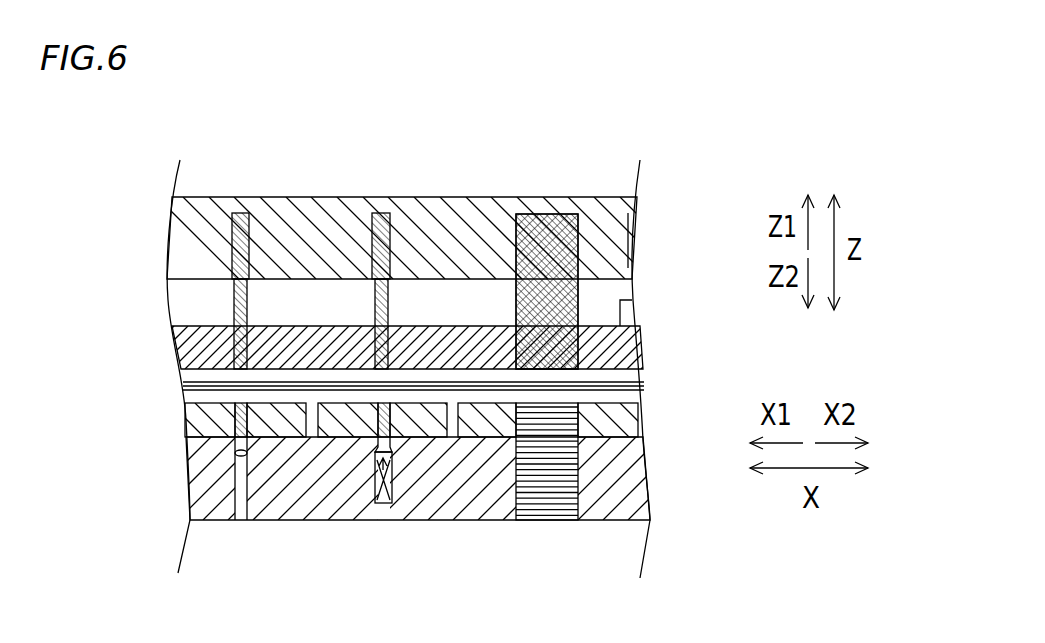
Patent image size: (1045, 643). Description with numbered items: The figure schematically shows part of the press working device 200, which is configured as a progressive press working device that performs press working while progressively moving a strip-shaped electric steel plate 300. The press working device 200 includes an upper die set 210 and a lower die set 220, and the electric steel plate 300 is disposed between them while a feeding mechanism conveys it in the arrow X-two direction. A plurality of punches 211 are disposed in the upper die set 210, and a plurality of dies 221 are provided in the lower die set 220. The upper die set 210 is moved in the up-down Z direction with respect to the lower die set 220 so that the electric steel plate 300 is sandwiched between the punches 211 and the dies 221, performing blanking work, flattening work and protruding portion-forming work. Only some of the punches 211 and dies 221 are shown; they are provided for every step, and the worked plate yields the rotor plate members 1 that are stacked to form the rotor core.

The press working device 200 is at (192, 119).
The upper die set 210 is at (453, 213).
The punches 211 is at (240, 213).
The electric steel plate 300 is at (215, 382).
The lower die set 220 is at (421, 495).
The dies 221 is at (265, 432).
The rotor plate members 1 is at (551, 505).